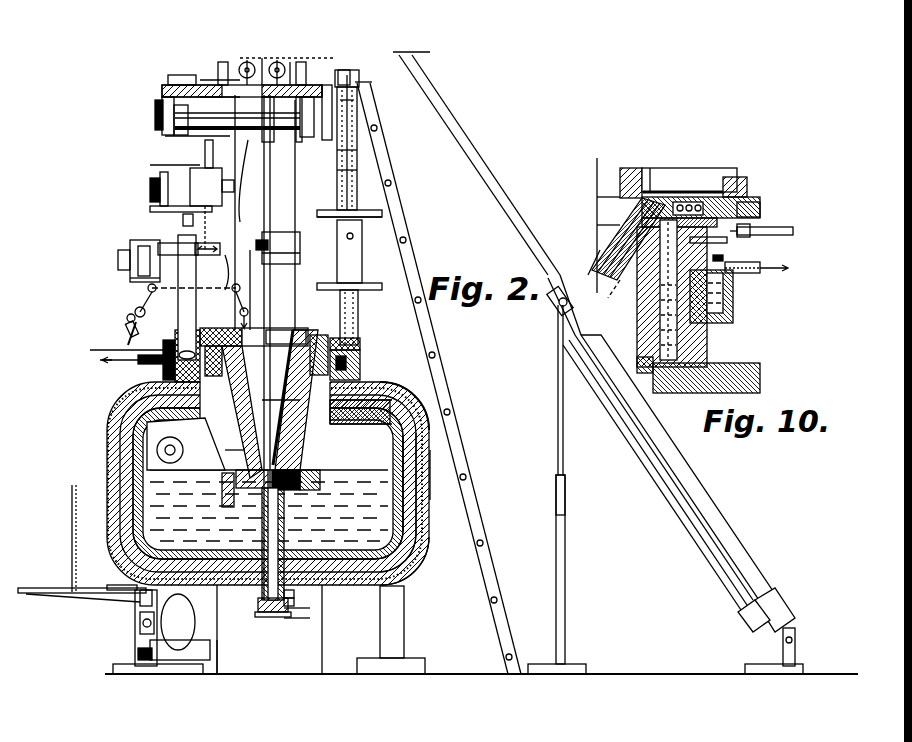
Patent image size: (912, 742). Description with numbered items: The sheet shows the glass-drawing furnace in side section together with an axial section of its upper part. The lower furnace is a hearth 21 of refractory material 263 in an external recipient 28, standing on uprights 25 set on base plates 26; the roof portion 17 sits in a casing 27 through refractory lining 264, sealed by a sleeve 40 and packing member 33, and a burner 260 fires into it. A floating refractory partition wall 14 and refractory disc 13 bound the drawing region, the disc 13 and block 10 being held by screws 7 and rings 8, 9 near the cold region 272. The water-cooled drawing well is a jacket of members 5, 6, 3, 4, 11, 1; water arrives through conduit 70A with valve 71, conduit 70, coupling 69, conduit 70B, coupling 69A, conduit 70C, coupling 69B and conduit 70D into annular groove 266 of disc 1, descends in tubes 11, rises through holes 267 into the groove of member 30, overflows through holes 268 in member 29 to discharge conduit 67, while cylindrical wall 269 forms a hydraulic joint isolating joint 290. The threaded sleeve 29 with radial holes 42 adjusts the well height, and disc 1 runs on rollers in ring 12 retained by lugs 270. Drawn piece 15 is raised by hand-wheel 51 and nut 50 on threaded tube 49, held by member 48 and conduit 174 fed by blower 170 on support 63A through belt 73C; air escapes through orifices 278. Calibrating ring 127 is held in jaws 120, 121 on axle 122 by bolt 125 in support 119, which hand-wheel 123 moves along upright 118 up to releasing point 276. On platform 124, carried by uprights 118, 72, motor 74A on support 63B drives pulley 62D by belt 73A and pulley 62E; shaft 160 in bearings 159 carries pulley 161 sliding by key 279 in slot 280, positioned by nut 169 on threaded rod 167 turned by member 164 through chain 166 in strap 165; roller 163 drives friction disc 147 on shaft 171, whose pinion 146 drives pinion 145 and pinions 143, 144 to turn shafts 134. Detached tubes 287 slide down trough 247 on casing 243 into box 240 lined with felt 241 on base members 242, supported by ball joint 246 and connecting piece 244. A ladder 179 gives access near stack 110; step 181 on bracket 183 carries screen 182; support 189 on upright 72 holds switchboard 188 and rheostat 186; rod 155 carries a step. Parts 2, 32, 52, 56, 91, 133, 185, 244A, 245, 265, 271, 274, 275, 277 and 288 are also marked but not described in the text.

In FIG. 2, the disc 1 is at (355, 340).
In FIG. 10, the disc 1 is at (745, 184).
In FIG. 2, the stopper rod 2 is at (243, 290).
In FIG. 2, the water jacket member 3 is at (226, 345).
In FIG. 10, the water jacket member 3 is at (600, 240).
In FIG. 2, the water jacket member 4 is at (225, 360).
In FIG. 10, the water jacket member 4 is at (628, 274).
In FIG. 2, the water jacket member 5 is at (296, 475).
In FIG. 2, the water jacket member 6 is at (320, 478).
In FIG. 2, the bolts or screws 7 is at (264, 385).
In FIG. 2, the ring 8 is at (240, 470).
In FIG. 2, the ring 9 is at (300, 390).
In FIG. 2, the refractory cylinder-conical block 10 is at (400, 400).
In FIG. 2, the tubes 11 is at (281, 386).
In FIG. 10, the tubes 11 is at (596, 258).
In FIG. 2, the race or ring 12 is at (360, 352).
In FIG. 10, the race or ring 12 is at (708, 190).
In FIG. 2, the refractory disc 13 is at (320, 500).
In FIG. 2, the partition wall 14 is at (420, 480).
In FIG. 2, the drawn glass piece 15 is at (222, 490).
In FIG. 2, the refractory roof portion 17 is at (360, 418).
In FIG. 2, the hearth 21 is at (410, 560).
In FIG. 2, the uprights 25 is at (404, 592).
In FIG. 2, the base plates 26 is at (410, 668).
In FIG. 2, the external casing 27 is at (420, 380).
In FIG. 2, the external recipient 28 is at (425, 567).
In FIG. 2, the screwthreaded sleeve 29 is at (127, 343).
In FIG. 10, the screwthreaded sleeve 29 is at (762, 238).
In FIG. 2, the stationary member 30 is at (162, 372).
In FIG. 10, the stationary member 30 is at (735, 318).
In FIG. 2, the heating element 32 is at (165, 440).
In FIG. 2, the annular packing member 33 is at (420, 470).
In FIG. 2, the sleeve 40 is at (312, 355).
In FIG. 10, the radial holes 42 is at (766, 226).
In FIG. 2, the member 48 is at (296, 604).
In FIG. 2, the threaded tube 49 is at (276, 614).
In FIG. 2, the nut member 50 is at (258, 617).
In FIG. 2, the hand-wheel 51 is at (292, 612).
In FIG. 2, the rod 52 is at (292, 620).
In FIG. 2, the guide tube 56 is at (178, 338).
In FIG. 2, the pulley 62D is at (160, 112).
In FIG. 2, the pulley 62E is at (155, 200).
In FIG. 2, the support 63A is at (195, 660).
In FIG. 2, the support 63B is at (183, 220).
In FIG. 2, the discharge conduit 67 is at (98, 360).
In FIG. 10, the discharge conduit 67 is at (752, 274).
In FIG. 2, the pivoted coupling 69 is at (194, 281).
In FIG. 2, the pivoted coupling 69A is at (205, 245).
In FIG. 2, the pivoted coupling 69B is at (228, 280).
In FIG. 2, the conduit 70 is at (136, 308).
In FIG. 2, the conduit 70A is at (128, 327).
In FIG. 2, the conduit 70B is at (142, 315).
In FIG. 2, the conduit 70C is at (215, 243).
In FIG. 2, the conduit 70D is at (240, 305).
In FIG. 2, the regulating cock or valve 71 is at (127, 318).
In FIG. 2, the upright 72 is at (205, 132).
In FIG. 2, the belt 73A is at (172, 128).
In FIG. 2, the belt 73C is at (140, 628).
In FIG. 2, the motor 74A is at (165, 168).
In FIG. 2, the clamp 91 is at (296, 594).
In FIG. 2, the stack 110 is at (313, 215).
In FIG. 2, the threaded upright 118 is at (358, 140).
In FIG. 2, the support 119 is at (364, 251).
In FIG. 2, the jaw 120 is at (358, 200).
In FIG. 2, the jaw 121 is at (262, 240).
In FIG. 2, the axle 122 is at (360, 172).
In FIG. 2, the hand-wheel 123 is at (354, 236).
In FIG. 2, the platform 124 is at (360, 78).
In FIG. 2, the bolt 125 is at (360, 215).
In FIG. 2, the calibrating ring 127 is at (280, 256).
In FIG. 2, the pulley 133 is at (277, 62).
In FIG. 2, the shafts 134 is at (250, 62).
In FIG. 2, the pinion 143 is at (302, 62).
In FIG. 2, the pinion 144 is at (308, 100).
In FIG. 2, the pinion 145 is at (225, 78).
In FIG. 2, the pinion 146 is at (222, 95).
In FIG. 2, the friction disc 147 is at (180, 78).
In FIG. 2, the rod 155 is at (222, 65).
In FIG. 2, the bearings 159 is at (155, 105).
In FIG. 2, the shaft 160 is at (278, 129).
In FIG. 2, the pulley 161 is at (240, 180).
In FIG. 2, the leather-faced roller 163 is at (175, 90).
In FIG. 2, the member 164 is at (200, 120).
In FIG. 2, the strap 165 is at (172, 138).
In FIG. 2, the driving chain 166 is at (175, 212).
In FIG. 2, the threaded rod 167 is at (312, 129).
In FIG. 2, the nut 169 is at (212, 182).
In FIG. 2, the blower 170 is at (178, 622).
In FIG. 2, the shaft 171 is at (262, 65).
In FIG. 2, the conduit 174 is at (228, 665).
In FIG. 2, the ladder 179 is at (375, 283).
In FIG. 2, the step 181 is at (44, 585).
In FIG. 2, the screen 182 is at (72, 502).
In FIG. 2, the bracket 183 is at (110, 600).
In FIG. 2, the switch assembly 185 is at (130, 279).
In FIG. 2, the regulating rheostat 186 is at (118, 258).
In FIG. 2, the switchboard 188 is at (170, 256).
In FIG. 2, the support 189 is at (132, 246).
In FIG. 2, the box 240 is at (722, 548).
In FIG. 2, the felt 241 is at (778, 600).
In FIG. 2, the base members 242 is at (750, 666).
In FIG. 2, the casing 243 is at (782, 645).
In FIG. 2, the connecting piece 244 is at (745, 622).
In FIG. 2, the pivot 244A is at (560, 310).
In FIG. 2, the rod 245 is at (565, 418).
In FIG. 2, the ball joint 246 is at (567, 572).
In FIG. 2, the wood trough or spout 247 is at (485, 185).
In FIG. 2, the burner 260 is at (160, 450).
In FIG. 2, the refractory material 263 is at (420, 515).
In FIG. 2, the refractory lining 264 is at (428, 415).
In FIG. 2, the block 265 is at (275, 337).
In FIG. 2, the annular groove 266 is at (318, 340).
In FIG. 10, the annular groove 266 is at (722, 180).
In FIG. 10, the holes 267 is at (660, 190).
In FIG. 10, the overflow holes 268 is at (712, 243).
In FIG. 10, the cylindrical wall 269 is at (690, 340).
In FIG. 10, the lugs 270 is at (752, 198).
In FIG. 2, the element 271 is at (240, 440).
In FIG. 2, the cold region 272 is at (227, 337).
In FIG. 2, the platform 274 is at (384, 213).
In FIG. 2, the screw 275 is at (355, 125).
In FIG. 2, the releasing point 276 is at (350, 105).
In FIG. 2, the casing 277 is at (120, 555).
In FIG. 2, the orifices 278 is at (262, 595).
In FIG. 2, the key 279 is at (212, 154).
In FIG. 2, the slot 280 is at (245, 160).
In FIG. 2, the tubes 287 is at (700, 525).
In FIG. 2, the sleeve 288 is at (567, 503).
In FIG. 2, the joint 290 is at (345, 415).